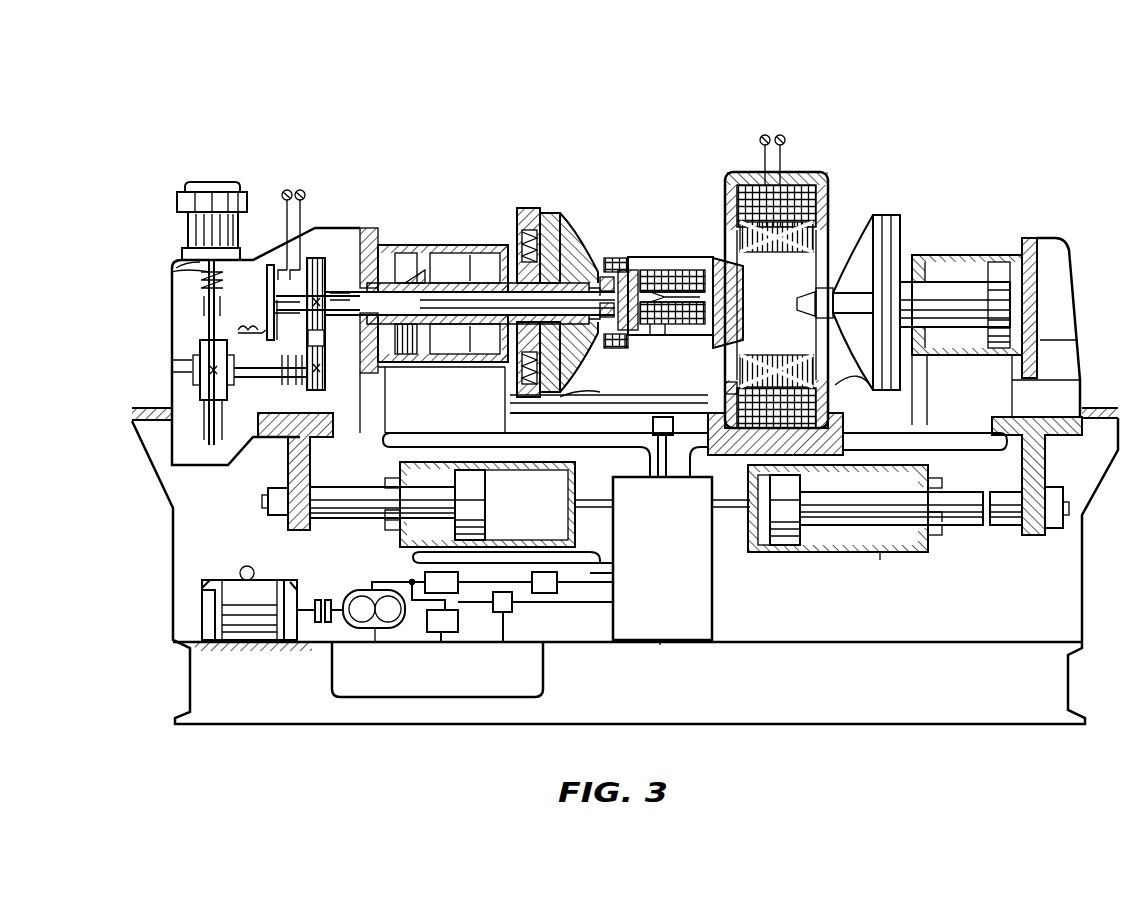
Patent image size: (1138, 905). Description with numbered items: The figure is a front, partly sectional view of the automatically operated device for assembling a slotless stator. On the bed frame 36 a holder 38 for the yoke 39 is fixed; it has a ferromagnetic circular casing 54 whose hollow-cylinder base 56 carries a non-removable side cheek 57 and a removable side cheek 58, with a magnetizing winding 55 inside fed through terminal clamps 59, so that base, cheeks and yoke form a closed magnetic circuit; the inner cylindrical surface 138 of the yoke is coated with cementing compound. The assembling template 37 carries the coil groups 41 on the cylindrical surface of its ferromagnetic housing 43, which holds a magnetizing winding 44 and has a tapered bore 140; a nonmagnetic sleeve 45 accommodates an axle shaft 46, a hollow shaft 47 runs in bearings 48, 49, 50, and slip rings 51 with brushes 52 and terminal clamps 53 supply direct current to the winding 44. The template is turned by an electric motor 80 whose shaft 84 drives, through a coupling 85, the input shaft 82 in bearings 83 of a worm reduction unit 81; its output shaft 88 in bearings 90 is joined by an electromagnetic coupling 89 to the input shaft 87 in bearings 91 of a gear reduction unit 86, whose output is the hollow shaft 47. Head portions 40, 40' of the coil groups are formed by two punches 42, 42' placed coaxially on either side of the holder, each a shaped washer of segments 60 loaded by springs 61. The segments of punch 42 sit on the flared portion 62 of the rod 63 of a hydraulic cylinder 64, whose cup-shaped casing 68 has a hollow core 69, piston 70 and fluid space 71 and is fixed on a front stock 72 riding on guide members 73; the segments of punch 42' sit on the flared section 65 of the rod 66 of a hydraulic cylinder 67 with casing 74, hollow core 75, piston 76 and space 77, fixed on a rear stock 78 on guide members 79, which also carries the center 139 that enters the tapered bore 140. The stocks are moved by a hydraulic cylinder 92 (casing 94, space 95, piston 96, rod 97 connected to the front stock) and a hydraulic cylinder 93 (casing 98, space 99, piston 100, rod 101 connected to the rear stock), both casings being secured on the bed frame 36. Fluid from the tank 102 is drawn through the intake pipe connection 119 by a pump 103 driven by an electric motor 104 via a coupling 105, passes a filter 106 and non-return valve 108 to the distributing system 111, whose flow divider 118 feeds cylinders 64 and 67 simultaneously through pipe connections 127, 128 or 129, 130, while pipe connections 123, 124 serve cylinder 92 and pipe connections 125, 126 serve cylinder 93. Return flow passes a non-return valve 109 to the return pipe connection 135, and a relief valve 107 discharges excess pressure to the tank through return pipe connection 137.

The bed frame 36 is at (1085, 608).
The assembling template 37 is at (592, 350).
The holder 38 is at (874, 227).
The yoke 39 is at (725, 392).
The head portion 40 is at (519, 279).
The head portion 40' is at (715, 285).
The coil groups 41 is at (700, 262).
The punch 42 is at (581, 295).
The punch 42' is at (854, 389).
The housing 43 is at (688, 348).
The magnetizing winding 44 is at (660, 348).
The sleeve 45 is at (618, 350).
The axle shaft 46 is at (622, 256).
The hollow shaft 47 is at (420, 300).
The bearing 48 is at (292, 325).
The bearing 49 is at (340, 293).
The bearing 50 is at (603, 277).
The slip rings 51 is at (272, 296).
The brushes 52 is at (272, 265).
The terminal clamps 53 is at (300, 190).
The circular casing 54 is at (803, 170).
The magnetizing winding 55 is at (818, 178).
The base 56 is at (740, 175).
The side cheek 57 is at (724, 203).
The side cheek 58 is at (830, 210).
The terminal clamps 59 is at (778, 136).
The segments 60 is at (630, 392).
The spring 61 is at (555, 208).
The flared portion 62 is at (524, 212).
The rod 63 is at (472, 354).
The hydraulic cylinder 64 is at (455, 242).
The flared section 65 is at (900, 240).
The rod 66 is at (965, 262).
The hydraulic cylinder 67 is at (990, 262).
The casing 68 is at (442, 354).
The hollow core 69 is at (480, 253).
The piston 70 is at (402, 258).
The space 71 is at (408, 354).
The front stock 72 is at (332, 228).
The guide members 73 is at (148, 408).
The casing 74 is at (985, 372).
The hollow core 75 is at (1062, 290).
The piston 76 is at (1028, 238).
The space 77 is at (940, 262).
The rear stock 78 is at (1078, 330).
The guide members 79 is at (1100, 408).
The electric motor 80 is at (198, 182).
The worm reduction unit 81 is at (182, 348).
The input shaft 82 is at (212, 422).
The bearings 83 is at (204, 306).
The shaft 84 is at (176, 252).
The coupling 85 is at (172, 282).
The gear reduction unit 86 is at (288, 440).
The input shaft 87 is at (303, 385).
The output shaft 88 is at (252, 378).
The electromagnetic coupling 89 is at (243, 312).
The bearings 90 is at (185, 352).
The bearings 91 is at (345, 335).
The hydraulic cylinder 92 is at (378, 541).
The hydraulic cylinder 93 is at (942, 556).
The casing 94 is at (400, 472).
The space 95 is at (526, 505).
The piston 96 is at (478, 510).
The rod 97 is at (326, 492).
The casing 98 is at (888, 552).
The space 99 is at (822, 545).
The piston 100 is at (776, 545).
The rod 101 is at (960, 500).
The tank 102 is at (552, 688).
The pump 103 is at (372, 590).
The electric motor 104 is at (230, 582).
The coupling 105 is at (320, 600).
The filter 106 is at (458, 593).
The relief valve 107 is at (448, 640).
The non-return valve 108 is at (560, 600).
The non-return valve 109 is at (512, 608).
The distributing system 111 is at (688, 640).
The hydraulic fluid flow divider 118 is at (662, 528).
The intake pipe connection 119 is at (372, 642).
The pipe connection 123 is at (590, 563).
The pipe connection 124 is at (598, 496).
The pipe connection 125 is at (858, 560).
The pipe connection 126 is at (740, 496).
The pipe connection 127 is at (405, 425).
The pipe connection 128 is at (1015, 400).
The pipe connection 129 is at (495, 423).
The pipe connection 130 is at (925, 412).
The return pipe connection 135 is at (505, 642).
The return pipe connection 137 is at (441, 632).
The inner cylindrical surface 138 is at (773, 252).
The center 139 is at (780, 345).
The tapered bore 140 is at (745, 307).